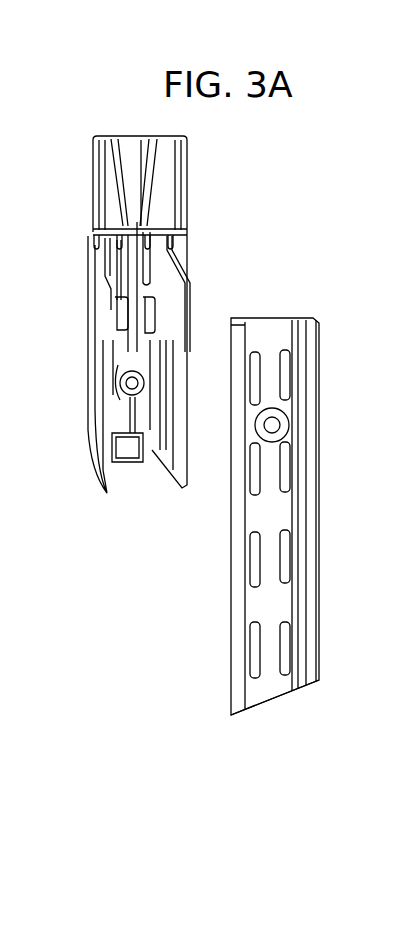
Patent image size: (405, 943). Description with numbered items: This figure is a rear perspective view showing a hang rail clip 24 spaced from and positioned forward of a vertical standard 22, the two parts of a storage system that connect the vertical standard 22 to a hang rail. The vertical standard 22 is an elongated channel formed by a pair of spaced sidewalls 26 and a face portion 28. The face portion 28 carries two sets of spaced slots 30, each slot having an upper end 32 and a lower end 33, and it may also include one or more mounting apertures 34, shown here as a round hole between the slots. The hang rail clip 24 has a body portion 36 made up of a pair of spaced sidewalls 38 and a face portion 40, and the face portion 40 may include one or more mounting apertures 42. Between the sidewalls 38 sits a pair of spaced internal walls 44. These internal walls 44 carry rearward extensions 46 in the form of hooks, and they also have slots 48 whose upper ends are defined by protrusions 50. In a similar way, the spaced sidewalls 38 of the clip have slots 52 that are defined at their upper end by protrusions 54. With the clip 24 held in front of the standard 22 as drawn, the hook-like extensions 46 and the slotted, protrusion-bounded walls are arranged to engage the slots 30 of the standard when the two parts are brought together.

The vertical standard 22 is at (225, 680).
The hang rail clip 24 is at (92, 470).
The spaced sidewalls 26 is at (312, 620).
The face portion 28 is at (267, 682).
The spaced slots 30 is at (258, 383).
The upper ends 32 is at (286, 350).
The lower ends 33 is at (260, 577).
The mounting apertures 34 is at (283, 427).
The body portion 36 is at (92, 177).
The spaced sidewalls 38 is at (97, 307).
The face portion 40 is at (135, 137).
The mounting apertures 42 is at (118, 362).
The spaced internal walls 44 is at (120, 174).
The rearward extensions 46 is at (117, 327).
The slots 48 is at (107, 270).
The protrusions 50 is at (110, 215).
The slots 52 is at (97, 243).
The protrusions 54 is at (98, 222).